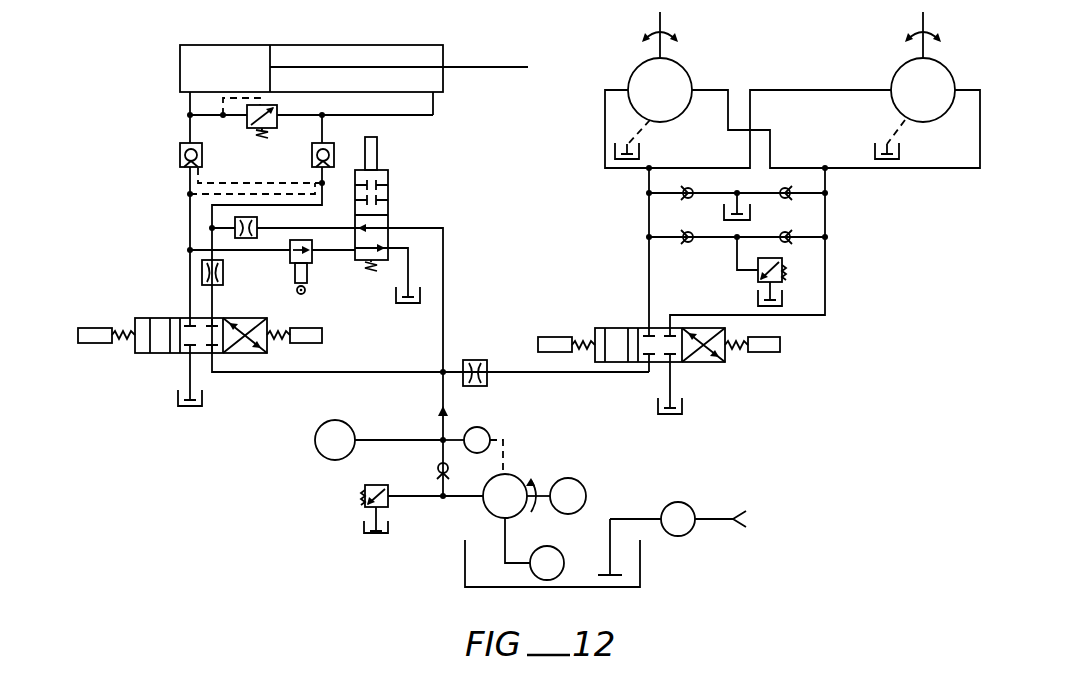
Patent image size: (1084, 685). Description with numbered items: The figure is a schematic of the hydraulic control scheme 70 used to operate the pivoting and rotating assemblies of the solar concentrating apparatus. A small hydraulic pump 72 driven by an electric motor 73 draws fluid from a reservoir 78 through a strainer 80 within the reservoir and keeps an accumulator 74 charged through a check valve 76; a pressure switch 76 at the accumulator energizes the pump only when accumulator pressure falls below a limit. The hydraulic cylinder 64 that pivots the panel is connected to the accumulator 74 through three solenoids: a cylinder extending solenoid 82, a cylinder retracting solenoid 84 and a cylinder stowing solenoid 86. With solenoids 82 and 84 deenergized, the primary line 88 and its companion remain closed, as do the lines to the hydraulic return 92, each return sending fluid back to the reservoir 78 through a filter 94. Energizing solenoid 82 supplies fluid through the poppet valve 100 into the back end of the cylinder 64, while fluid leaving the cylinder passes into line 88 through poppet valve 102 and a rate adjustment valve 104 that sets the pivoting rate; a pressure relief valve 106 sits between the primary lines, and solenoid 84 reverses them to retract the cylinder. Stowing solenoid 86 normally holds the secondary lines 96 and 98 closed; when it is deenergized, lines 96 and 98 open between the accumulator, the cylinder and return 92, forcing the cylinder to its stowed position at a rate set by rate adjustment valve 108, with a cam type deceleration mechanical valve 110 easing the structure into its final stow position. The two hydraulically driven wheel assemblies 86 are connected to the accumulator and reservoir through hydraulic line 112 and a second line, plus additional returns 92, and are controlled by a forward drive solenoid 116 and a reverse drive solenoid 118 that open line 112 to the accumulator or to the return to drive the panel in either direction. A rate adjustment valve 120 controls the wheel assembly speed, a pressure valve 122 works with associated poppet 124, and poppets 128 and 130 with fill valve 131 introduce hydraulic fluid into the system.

The hydraulic cylinder 64 is at (348, 45).
The hydraulic control scheme 70 is at (248, 547).
The hydraulic pump 72 is at (490, 512).
The electric motor 73 is at (585, 488).
The accumulator 74 is at (348, 422).
The check valve / pressure switch 76 is at (487, 428).
The reservoir 78 is at (640, 575).
The strainer 80 is at (563, 553).
The cylinder extending solenoid 82 is at (297, 343).
The cylinder retracting solenoid 84 is at (98, 343).
The cylinder stowing solenoid / hydraulically driven wheel assemblies 86 is at (377, 152).
The primary line 88 is at (212, 302).
The hydraulic return 92 is at (205, 398).
The filter 94 is at (685, 536).
The secondary line 96 is at (190, 268).
The secondary line 98 is at (341, 252).
The poppet valve 100 is at (180, 155).
The poppet valve 102 is at (332, 145).
The rate adjustment valve 104 is at (202, 281).
The pressure relief valve 106 is at (250, 129).
The rate adjustment valve 108 is at (257, 223).
The cam type deceleration mechanical valve 110 is at (290, 270).
The hydraulic line 112 is at (649, 297).
The forward drive solenoid 116 is at (553, 337).
The reverse drive solenoid 118 is at (768, 353).
The rate adjustment valve 120 is at (475, 360).
The pressure valve 122 is at (757, 278).
The poppet 124 is at (680, 243).
The poppet 128 is at (680, 198).
The poppet 130 is at (800, 198).
The fill valve 131 is at (752, 213).